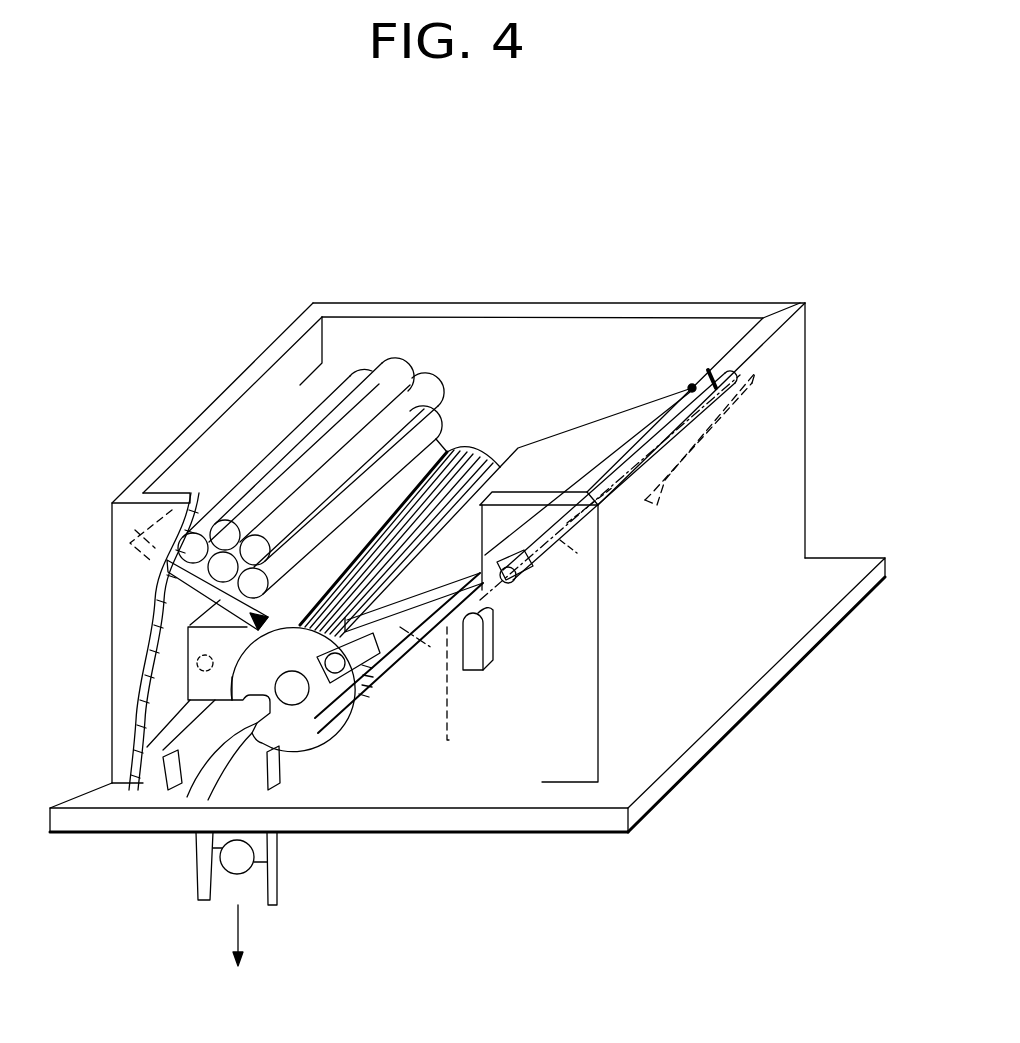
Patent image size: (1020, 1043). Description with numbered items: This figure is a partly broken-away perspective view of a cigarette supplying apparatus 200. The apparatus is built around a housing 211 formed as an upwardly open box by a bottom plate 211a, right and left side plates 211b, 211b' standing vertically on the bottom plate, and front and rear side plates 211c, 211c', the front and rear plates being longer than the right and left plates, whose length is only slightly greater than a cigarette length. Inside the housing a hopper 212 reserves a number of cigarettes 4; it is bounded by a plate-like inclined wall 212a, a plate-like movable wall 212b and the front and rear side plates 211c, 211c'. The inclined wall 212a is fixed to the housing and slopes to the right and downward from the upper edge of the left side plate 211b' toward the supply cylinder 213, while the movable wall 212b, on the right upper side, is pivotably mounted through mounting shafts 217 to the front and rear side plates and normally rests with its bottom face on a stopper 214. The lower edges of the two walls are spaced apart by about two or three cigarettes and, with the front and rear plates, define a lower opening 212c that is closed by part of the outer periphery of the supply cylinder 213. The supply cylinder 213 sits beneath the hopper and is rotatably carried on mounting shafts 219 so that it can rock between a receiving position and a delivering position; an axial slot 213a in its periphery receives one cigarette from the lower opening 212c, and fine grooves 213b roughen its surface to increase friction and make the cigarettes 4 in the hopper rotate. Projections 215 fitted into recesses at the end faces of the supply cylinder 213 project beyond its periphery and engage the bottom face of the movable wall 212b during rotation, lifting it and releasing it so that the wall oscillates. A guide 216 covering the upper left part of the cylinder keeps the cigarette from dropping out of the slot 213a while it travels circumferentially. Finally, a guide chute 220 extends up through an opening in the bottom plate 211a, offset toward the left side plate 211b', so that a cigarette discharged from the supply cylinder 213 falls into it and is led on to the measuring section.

The cigarette supplying apparatus 200 is at (343, 215).
The housing 211 is at (660, 292).
The bottom plate 211a is at (763, 642).
The right side plate 211b is at (727, 430).
The left side plate 211b' is at (217, 543).
The front side plate 211c is at (629, 644).
The rear side plate 211c' is at (552, 307).
The hopper 212 is at (440, 332).
The inclined wall 212a is at (282, 413).
The movable wall 212b is at (540, 457).
The lower opening 212c is at (473, 450).
The cigarettes 4 is at (252, 503).
The supply cylinder 213 is at (293, 745).
The slot 213a is at (205, 765).
The fine grooves 213b is at (213, 617).
The stopper 214 is at (670, 478).
The projections 215 is at (397, 655).
The guide 216 is at (203, 645).
The mounting shafts 217 is at (693, 385).
The mounting shafts 219 is at (296, 698).
The guide chute 220 is at (203, 877).